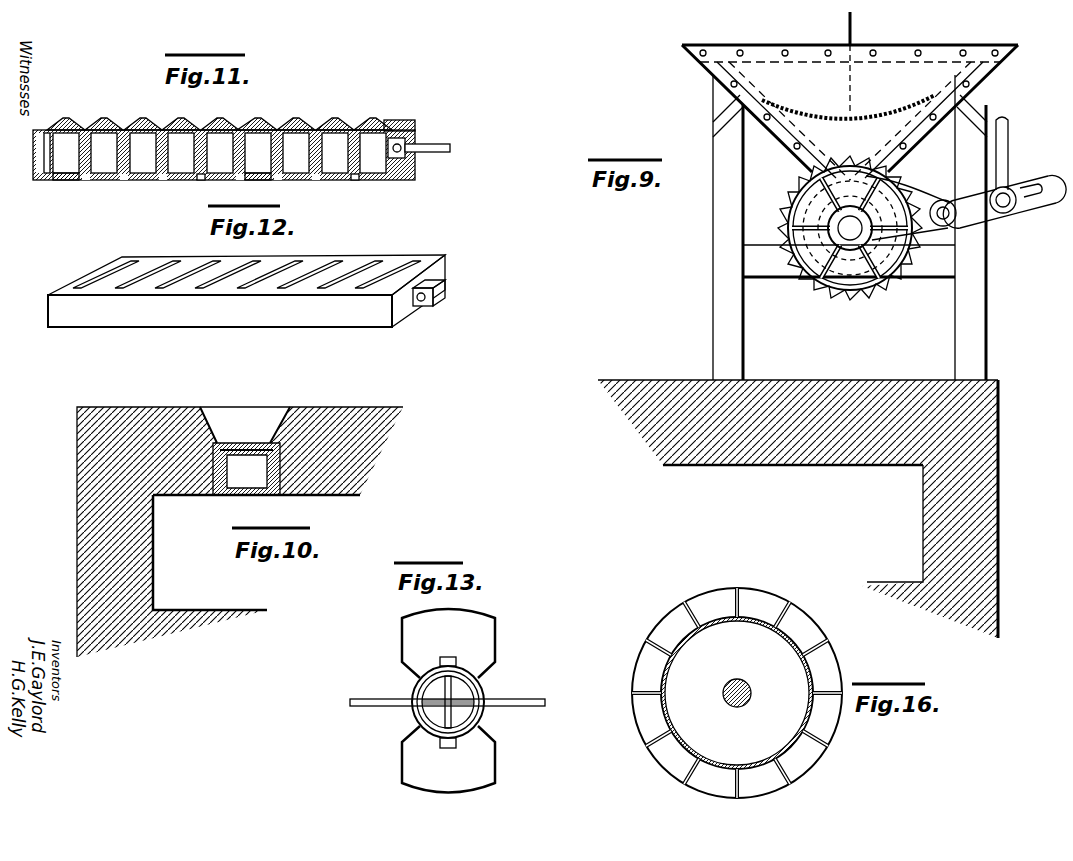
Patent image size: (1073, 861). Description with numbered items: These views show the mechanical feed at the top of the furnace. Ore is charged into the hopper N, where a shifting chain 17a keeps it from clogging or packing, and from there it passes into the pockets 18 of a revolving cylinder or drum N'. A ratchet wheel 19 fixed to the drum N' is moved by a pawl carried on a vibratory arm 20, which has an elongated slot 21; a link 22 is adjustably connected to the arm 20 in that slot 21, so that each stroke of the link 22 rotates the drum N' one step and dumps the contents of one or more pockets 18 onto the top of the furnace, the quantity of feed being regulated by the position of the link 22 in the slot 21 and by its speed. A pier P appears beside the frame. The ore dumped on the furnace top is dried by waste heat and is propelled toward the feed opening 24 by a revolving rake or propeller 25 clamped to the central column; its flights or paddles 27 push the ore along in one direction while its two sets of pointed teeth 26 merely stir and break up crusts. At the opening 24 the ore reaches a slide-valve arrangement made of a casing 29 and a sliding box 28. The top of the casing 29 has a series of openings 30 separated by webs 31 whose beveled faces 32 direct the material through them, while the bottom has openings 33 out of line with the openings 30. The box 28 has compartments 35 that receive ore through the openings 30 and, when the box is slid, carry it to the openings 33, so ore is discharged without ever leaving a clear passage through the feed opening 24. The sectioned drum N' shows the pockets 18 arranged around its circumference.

In FIG. 9, the shifting chain 17a is at (848, 99).
In FIG. 9, the pockets 18 is at (800, 190).
In FIG. 16, the pockets 18 is at (737, 693).
In FIG. 9, the ratchet wheel 19 is at (888, 280).
In FIG. 9, the vibratory arm 20 is at (995, 220).
In FIG. 9, the elongated slot 21 is at (1045, 203).
In FIG. 9, the link 22 is at (1010, 165).
In FIG. 10, the feed opening 24 is at (248, 410).
In FIG. 13, the revolving rake or propeller 25 is at (466, 700).
In FIG. 13, the pointed teeth 26 is at (447, 701).
In FIG. 13, the flights or paddles 27 is at (448, 701).
In FIG. 11, the sliding box 28 is at (125, 180).
In FIG. 12, the sliding box 28 is at (246, 291).
In FIG. 10, the sliding box 28 is at (258, 447).
In FIG. 11, the casing 29 is at (399, 118).
In FIG. 10, the casing 29 is at (226, 448).
In FIG. 11, the openings 30 is at (357, 125).
In FIG. 11, the webs 31 is at (253, 125).
In FIG. 11, the beveled faces 32 is at (150, 127).
In FIG. 11, the openings 33 is at (265, 180).
In FIG. 11, the compartments 35 is at (355, 178).
In FIG. 12, the compartments 35 is at (405, 260).
In FIG. 9, the hopper N is at (811, 225).
In FIG. 16, the revolving cylinder or drum N' is at (746, 697).
In FIG. 9, the pier P is at (911, 202).